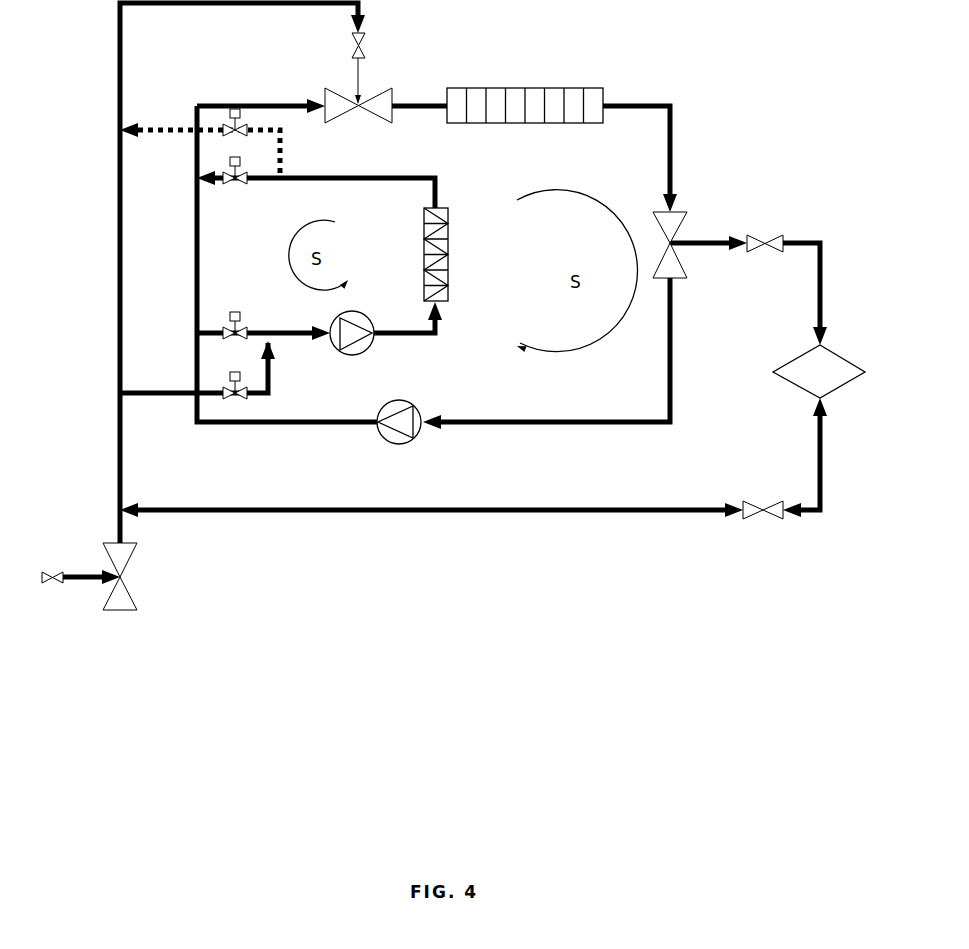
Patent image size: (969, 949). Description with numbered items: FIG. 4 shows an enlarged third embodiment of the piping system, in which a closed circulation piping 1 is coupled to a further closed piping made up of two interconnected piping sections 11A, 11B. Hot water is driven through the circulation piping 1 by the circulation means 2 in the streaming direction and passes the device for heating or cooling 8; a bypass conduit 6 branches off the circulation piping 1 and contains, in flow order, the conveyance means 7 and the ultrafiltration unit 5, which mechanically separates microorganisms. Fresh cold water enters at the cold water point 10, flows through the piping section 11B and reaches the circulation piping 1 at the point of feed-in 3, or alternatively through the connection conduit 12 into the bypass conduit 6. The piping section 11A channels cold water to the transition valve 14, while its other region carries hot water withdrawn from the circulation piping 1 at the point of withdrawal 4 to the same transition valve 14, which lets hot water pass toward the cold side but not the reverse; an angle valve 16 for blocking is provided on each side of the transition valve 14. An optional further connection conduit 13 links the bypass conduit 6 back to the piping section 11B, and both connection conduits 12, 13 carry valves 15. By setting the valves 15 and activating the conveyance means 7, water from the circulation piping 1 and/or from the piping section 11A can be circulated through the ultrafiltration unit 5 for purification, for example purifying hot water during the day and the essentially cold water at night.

The circulation piping 1 is at (683, 129).
The circulation means 2 is at (418, 438).
The point of feed-in 3 is at (370, 90).
The point of withdrawal 4 is at (688, 215).
The ultrafiltration unit 5 is at (450, 222).
The bypass conduit 6 is at (296, 327).
The conveyance means 7 is at (372, 348).
The device for heating or cooling 8 is at (555, 92).
The cold water point 10 is at (140, 598).
The piping section 11A is at (828, 303).
The piping section 11B is at (112, 98).
The connection conduit 12 is at (153, 399).
The connection conduit 13 is at (160, 150).
The transition valve 14 is at (840, 388).
The valves 15 is at (221, 144).
The angle valve 16 is at (767, 238).